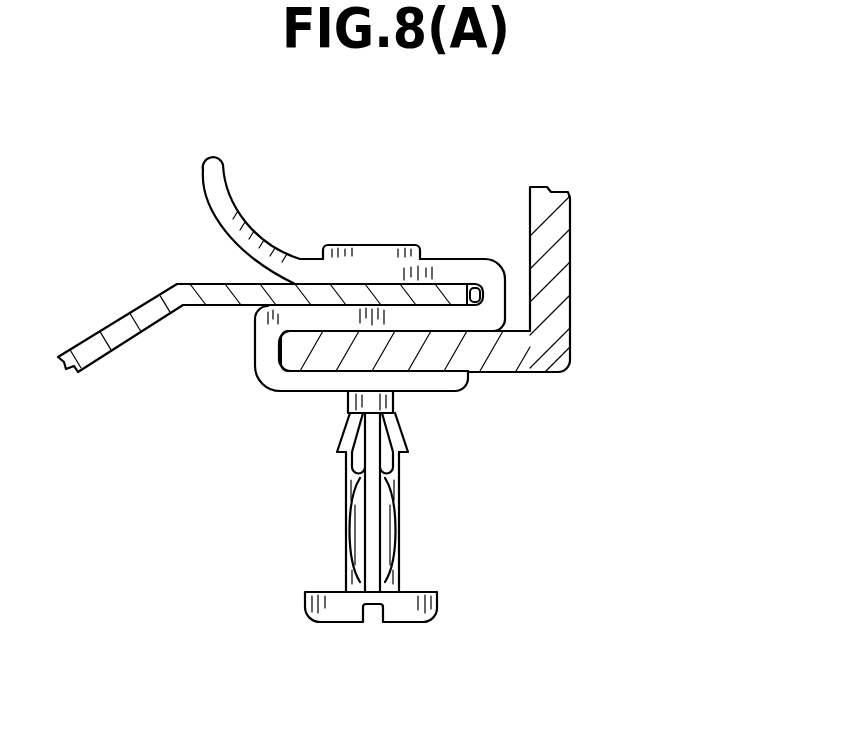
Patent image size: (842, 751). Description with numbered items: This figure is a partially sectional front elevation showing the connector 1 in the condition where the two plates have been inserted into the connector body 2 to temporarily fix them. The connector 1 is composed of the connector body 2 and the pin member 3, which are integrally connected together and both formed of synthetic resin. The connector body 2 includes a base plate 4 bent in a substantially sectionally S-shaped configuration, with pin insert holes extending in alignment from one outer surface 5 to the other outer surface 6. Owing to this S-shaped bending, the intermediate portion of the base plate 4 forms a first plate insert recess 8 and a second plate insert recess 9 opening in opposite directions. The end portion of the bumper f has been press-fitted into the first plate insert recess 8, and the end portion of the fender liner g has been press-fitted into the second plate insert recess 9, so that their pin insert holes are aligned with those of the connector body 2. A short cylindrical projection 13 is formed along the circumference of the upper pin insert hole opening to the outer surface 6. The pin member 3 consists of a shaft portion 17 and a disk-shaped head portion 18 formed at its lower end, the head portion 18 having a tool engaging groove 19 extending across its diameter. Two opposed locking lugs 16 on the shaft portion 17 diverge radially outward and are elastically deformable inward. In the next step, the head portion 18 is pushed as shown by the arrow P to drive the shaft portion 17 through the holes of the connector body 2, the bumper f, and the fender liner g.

The connector 1 is at (369, 216).
The connector body 2 is at (297, 387).
The pin member 3 is at (405, 535).
The base plate 4 is at (276, 384).
The one outer surface 5 is at (255, 373).
The other outer surface 6 is at (453, 258).
The first plate insert recess 8 is at (275, 346).
The second plate insert recess 9 is at (477, 290).
The short cylindrical projection 13 is at (437, 221).
The locking lugs 16 is at (395, 437).
The shaft portion 17 is at (345, 538).
The head portion 18 is at (330, 613).
The tool engaging groove 19 is at (378, 618).
The fender liner g is at (143, 303).
The bumper f is at (551, 343).
The external pressure P is at (373, 632).